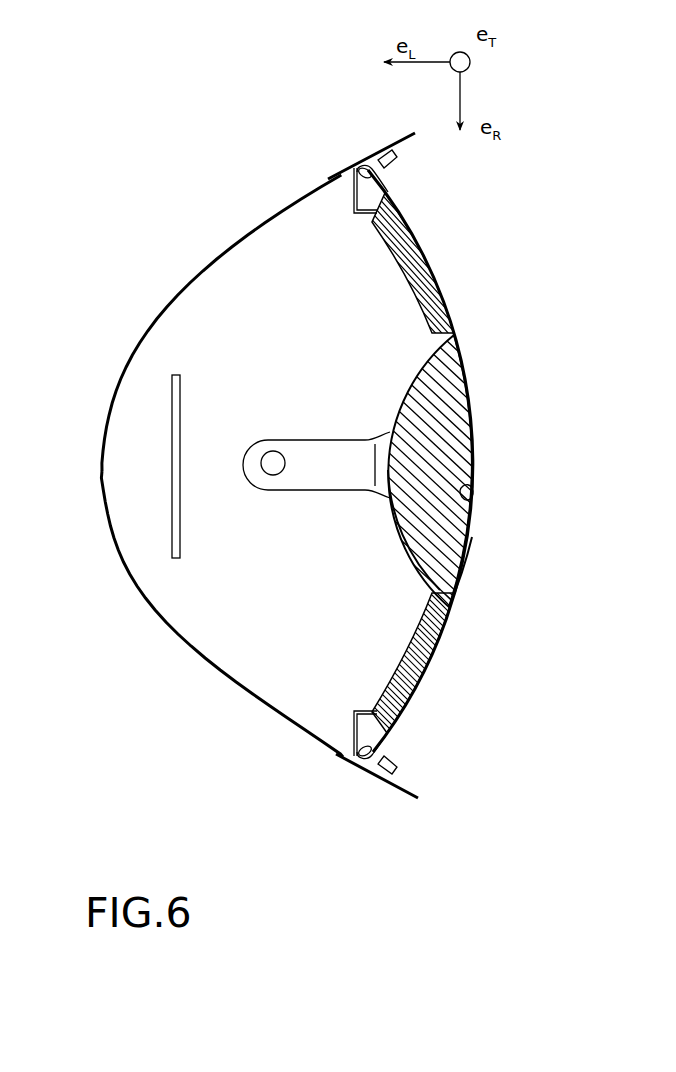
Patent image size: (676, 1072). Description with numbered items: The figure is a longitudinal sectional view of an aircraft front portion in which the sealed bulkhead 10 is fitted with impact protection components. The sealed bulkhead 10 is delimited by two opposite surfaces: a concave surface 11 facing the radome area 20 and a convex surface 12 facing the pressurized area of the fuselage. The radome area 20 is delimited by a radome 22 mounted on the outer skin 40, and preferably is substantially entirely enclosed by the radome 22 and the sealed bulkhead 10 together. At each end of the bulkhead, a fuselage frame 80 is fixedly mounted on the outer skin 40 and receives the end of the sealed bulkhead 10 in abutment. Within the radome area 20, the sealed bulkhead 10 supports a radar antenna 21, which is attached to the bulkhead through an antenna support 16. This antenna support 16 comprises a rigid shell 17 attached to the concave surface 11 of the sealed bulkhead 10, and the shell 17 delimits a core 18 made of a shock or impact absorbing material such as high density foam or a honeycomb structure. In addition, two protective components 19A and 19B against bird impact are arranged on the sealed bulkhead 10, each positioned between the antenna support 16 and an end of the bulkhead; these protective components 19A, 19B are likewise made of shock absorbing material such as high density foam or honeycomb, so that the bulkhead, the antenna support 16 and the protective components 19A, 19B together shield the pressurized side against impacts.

The sealed bulkhead 10 is at (502, 360).
The concave surface 11 is at (472, 488).
The convex surface 12 is at (472, 537).
The antenna support 16 is at (330, 505).
The rigid shell 17 is at (395, 545).
The core 18 is at (447, 445).
The protective component 19A is at (420, 237).
The protective component 19B is at (430, 650).
The radome area 20 is at (245, 267).
The radar antenna 21 is at (172, 412).
The radome 22 is at (150, 600).
The outer skin 40 is at (416, 803).
The fuselage frame 80 is at (335, 731).